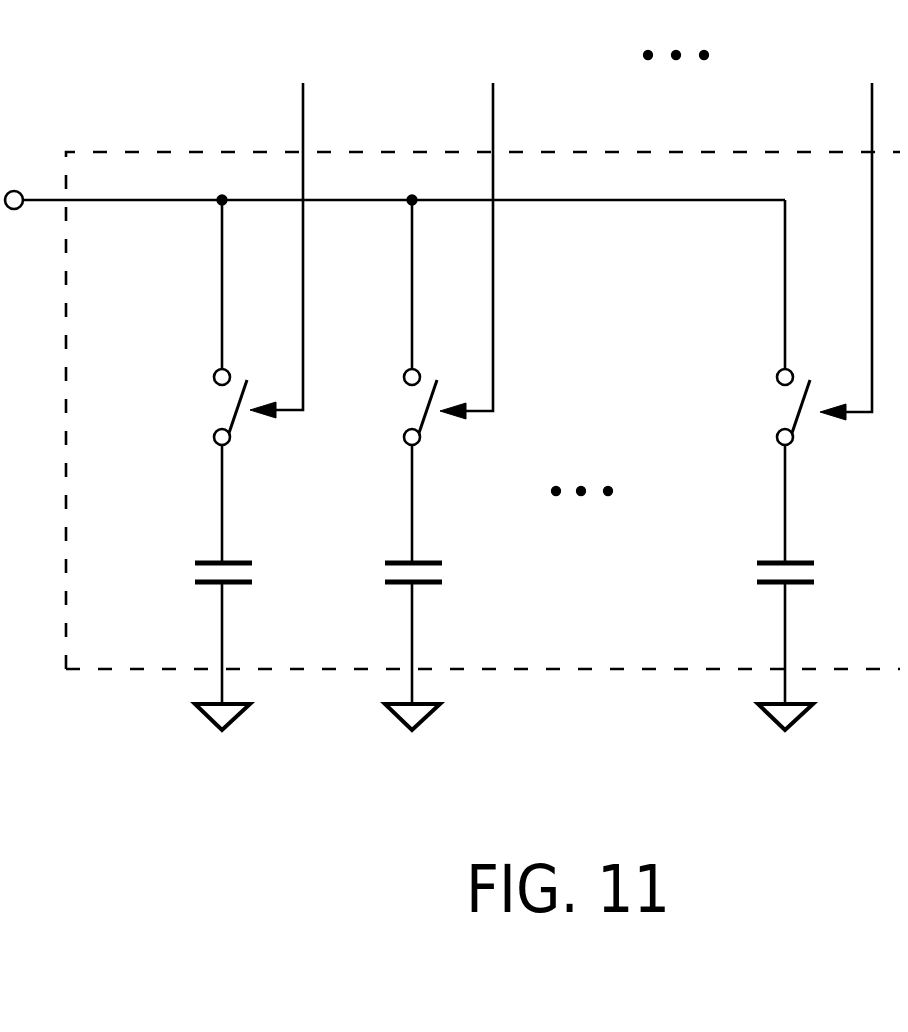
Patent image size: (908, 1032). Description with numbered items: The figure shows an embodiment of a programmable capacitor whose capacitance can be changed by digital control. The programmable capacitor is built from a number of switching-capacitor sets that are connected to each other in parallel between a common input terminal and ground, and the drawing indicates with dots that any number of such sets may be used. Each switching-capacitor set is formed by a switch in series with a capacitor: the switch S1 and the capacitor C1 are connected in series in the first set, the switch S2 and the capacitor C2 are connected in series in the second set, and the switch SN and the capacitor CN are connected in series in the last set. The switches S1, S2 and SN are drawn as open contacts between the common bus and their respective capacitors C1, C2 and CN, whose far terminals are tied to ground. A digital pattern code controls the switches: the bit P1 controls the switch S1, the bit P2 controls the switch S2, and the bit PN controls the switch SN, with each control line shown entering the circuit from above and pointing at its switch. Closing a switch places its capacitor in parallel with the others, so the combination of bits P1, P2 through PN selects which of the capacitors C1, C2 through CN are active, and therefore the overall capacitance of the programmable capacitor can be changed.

The switch S1 is at (203, 381).
The switch S2 is at (393, 381).
The switch SN is at (762, 381).
The capacitor C1 is at (194, 638).
The capacitor C2 is at (385, 638).
The capacitor CN is at (755, 638).
The digital pattern code bit P1 is at (285, 225).
The digital pattern code bit P2 is at (477, 225).
The digital pattern code bit PN is at (857, 226).